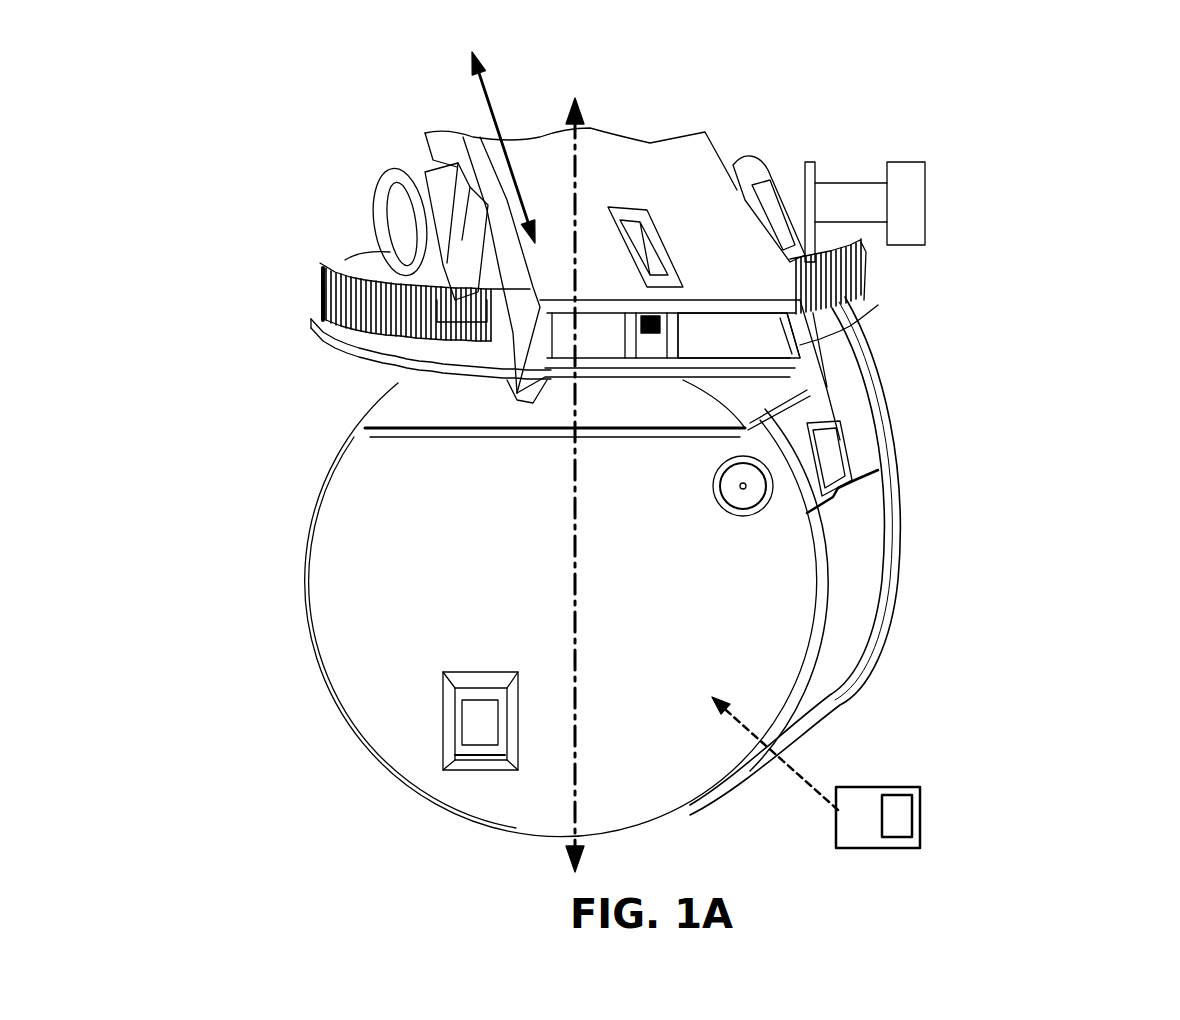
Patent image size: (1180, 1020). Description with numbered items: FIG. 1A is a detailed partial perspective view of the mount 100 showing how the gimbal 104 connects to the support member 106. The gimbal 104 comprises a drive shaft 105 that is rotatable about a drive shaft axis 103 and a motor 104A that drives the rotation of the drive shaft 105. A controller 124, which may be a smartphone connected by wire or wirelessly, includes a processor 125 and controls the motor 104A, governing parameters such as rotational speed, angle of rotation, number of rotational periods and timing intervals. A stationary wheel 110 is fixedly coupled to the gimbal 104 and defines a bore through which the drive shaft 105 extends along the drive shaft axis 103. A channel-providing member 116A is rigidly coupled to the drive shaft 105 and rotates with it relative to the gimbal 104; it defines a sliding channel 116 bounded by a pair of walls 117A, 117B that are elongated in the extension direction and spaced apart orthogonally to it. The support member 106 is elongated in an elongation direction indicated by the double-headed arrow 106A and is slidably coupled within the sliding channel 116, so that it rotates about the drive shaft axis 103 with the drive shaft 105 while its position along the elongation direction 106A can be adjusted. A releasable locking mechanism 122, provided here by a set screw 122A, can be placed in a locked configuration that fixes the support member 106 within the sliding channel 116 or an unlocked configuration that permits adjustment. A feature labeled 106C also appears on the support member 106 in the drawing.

The mount 100 is at (1078, 125).
The drive shaft axis 103 is at (575, 535).
The gimbal 104 is at (681, 567).
The motor 104A is at (745, 607).
The drive shaft 105 is at (497, 357).
The support member 106 is at (710, 242).
The elongation direction 106A is at (480, 86).
The slot 106C is at (672, 298).
The stationary wheel 110 is at (327, 287).
The sliding channel 116 is at (445, 253).
The channel-providing member 116A is at (430, 223).
The wall 117A is at (440, 210).
The wall 117B is at (757, 177).
The releasable locking mechanism 122 is at (922, 187).
The set screw 122A is at (860, 207).
The controller 124 is at (863, 817).
The processor 125 is at (905, 818).